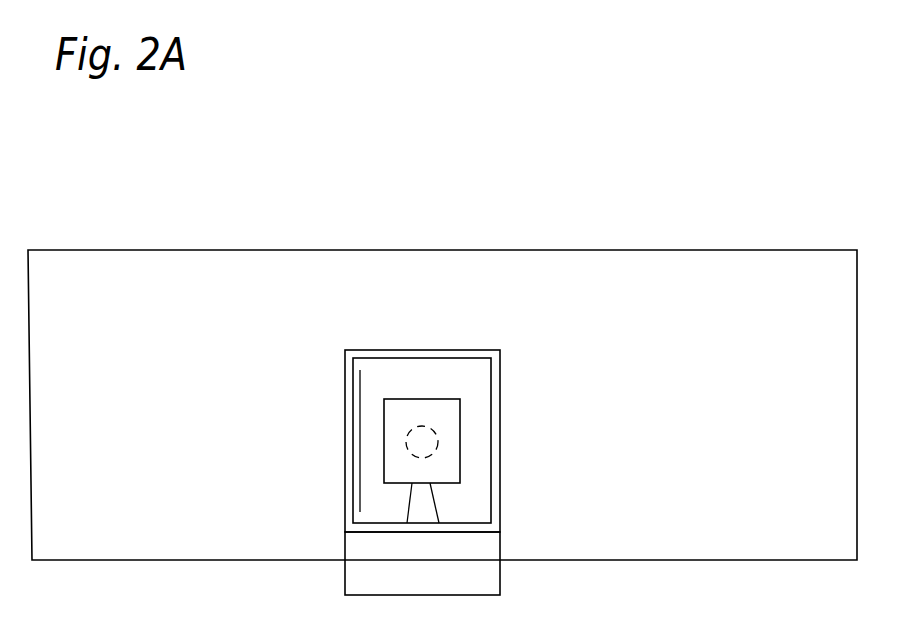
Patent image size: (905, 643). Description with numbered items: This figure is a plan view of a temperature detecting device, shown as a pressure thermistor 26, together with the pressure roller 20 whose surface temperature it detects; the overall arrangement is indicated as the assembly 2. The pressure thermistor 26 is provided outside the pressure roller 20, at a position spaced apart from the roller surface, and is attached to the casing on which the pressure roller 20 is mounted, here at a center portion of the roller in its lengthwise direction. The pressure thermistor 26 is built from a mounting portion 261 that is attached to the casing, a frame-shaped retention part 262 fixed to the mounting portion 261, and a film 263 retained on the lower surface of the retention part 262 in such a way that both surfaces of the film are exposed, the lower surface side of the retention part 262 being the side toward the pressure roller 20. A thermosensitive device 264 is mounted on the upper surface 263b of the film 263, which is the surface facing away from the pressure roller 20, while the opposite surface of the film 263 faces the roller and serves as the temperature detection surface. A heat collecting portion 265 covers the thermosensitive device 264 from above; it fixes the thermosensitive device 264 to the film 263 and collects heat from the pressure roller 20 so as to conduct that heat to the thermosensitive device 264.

The liquid ejecting head unit 2 is at (577, 249).
The pressure roller 20 is at (702, 250).
The pressure thermistor 26 is at (400, 348).
The mounting portion 261 is at (483, 573).
The retention part 262 is at (495, 405).
The film 263 is at (373, 383).
The upper surface of the film 263b is at (368, 448).
The thermosensitive device 264 is at (432, 425).
The heat collecting portion 265 is at (455, 453).